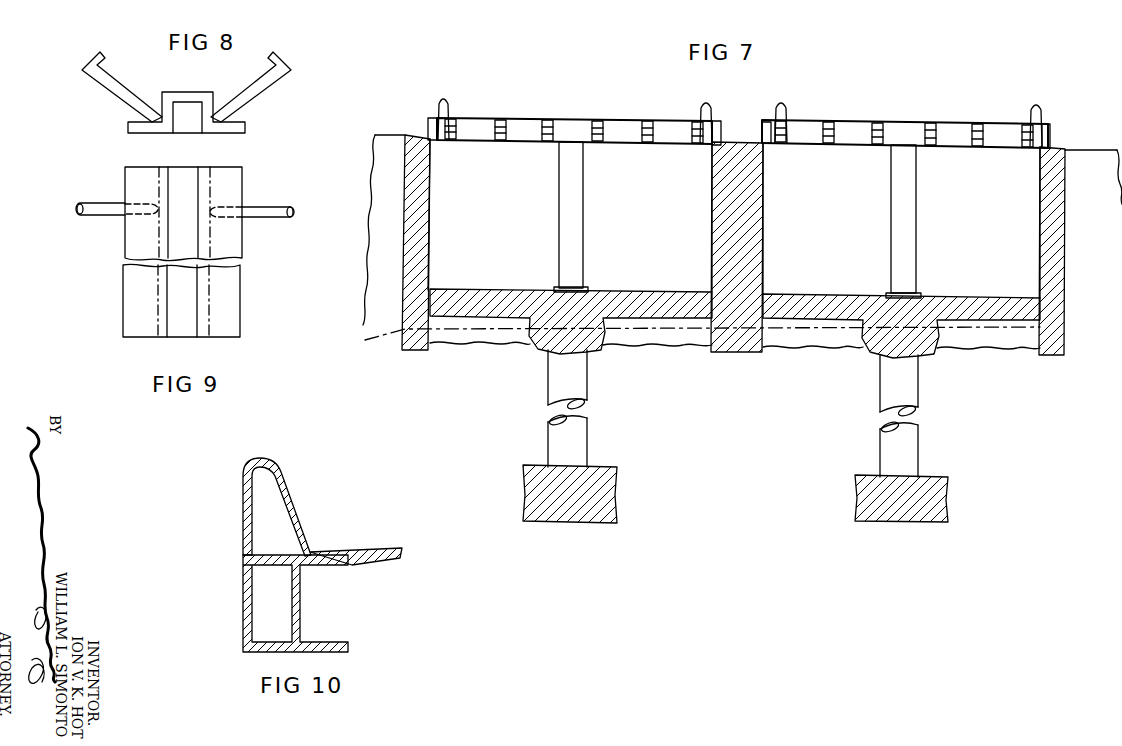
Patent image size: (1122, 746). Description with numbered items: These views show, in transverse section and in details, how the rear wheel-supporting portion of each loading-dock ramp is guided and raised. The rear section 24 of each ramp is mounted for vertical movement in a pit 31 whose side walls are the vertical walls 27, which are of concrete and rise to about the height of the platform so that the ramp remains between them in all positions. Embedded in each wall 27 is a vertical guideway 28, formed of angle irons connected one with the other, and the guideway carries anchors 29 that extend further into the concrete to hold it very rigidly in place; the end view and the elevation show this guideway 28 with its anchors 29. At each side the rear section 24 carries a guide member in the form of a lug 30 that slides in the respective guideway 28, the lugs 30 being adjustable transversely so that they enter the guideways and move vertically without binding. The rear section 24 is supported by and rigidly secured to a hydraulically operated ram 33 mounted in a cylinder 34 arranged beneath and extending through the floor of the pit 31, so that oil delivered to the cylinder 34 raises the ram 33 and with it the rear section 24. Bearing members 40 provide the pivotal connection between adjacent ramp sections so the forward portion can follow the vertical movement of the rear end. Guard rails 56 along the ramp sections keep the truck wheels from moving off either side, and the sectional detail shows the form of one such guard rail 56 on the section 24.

In FIG. 7, the rear section 24 is at (580, 130).
In FIG. 10, the rear section 24 is at (396, 553).
In FIG. 7, the vertical walls 27 is at (407, 247).
In FIG. 7, the vertical guideways 28 is at (768, 270).
In FIG. 8, the vertical guideways 28 is at (207, 100).
In FIG. 9, the vertical guideways 28 is at (208, 199).
In FIG. 8, the anchors 29 is at (101, 60).
In FIG. 9, the anchors 29 is at (105, 214).
In FIG. 7, the lugs 30 is at (718, 121).
In FIG. 7, the pit 31 is at (480, 273).
In FIG. 7, the ram 33 is at (578, 232).
In FIG. 7, the cylinder 34 is at (575, 420).
In FIG. 7, the bearing members 40 is at (497, 143).
In FIG. 7, the guard rails 56 is at (445, 101).
In FIG. 10, the guard rails 56 is at (285, 482).